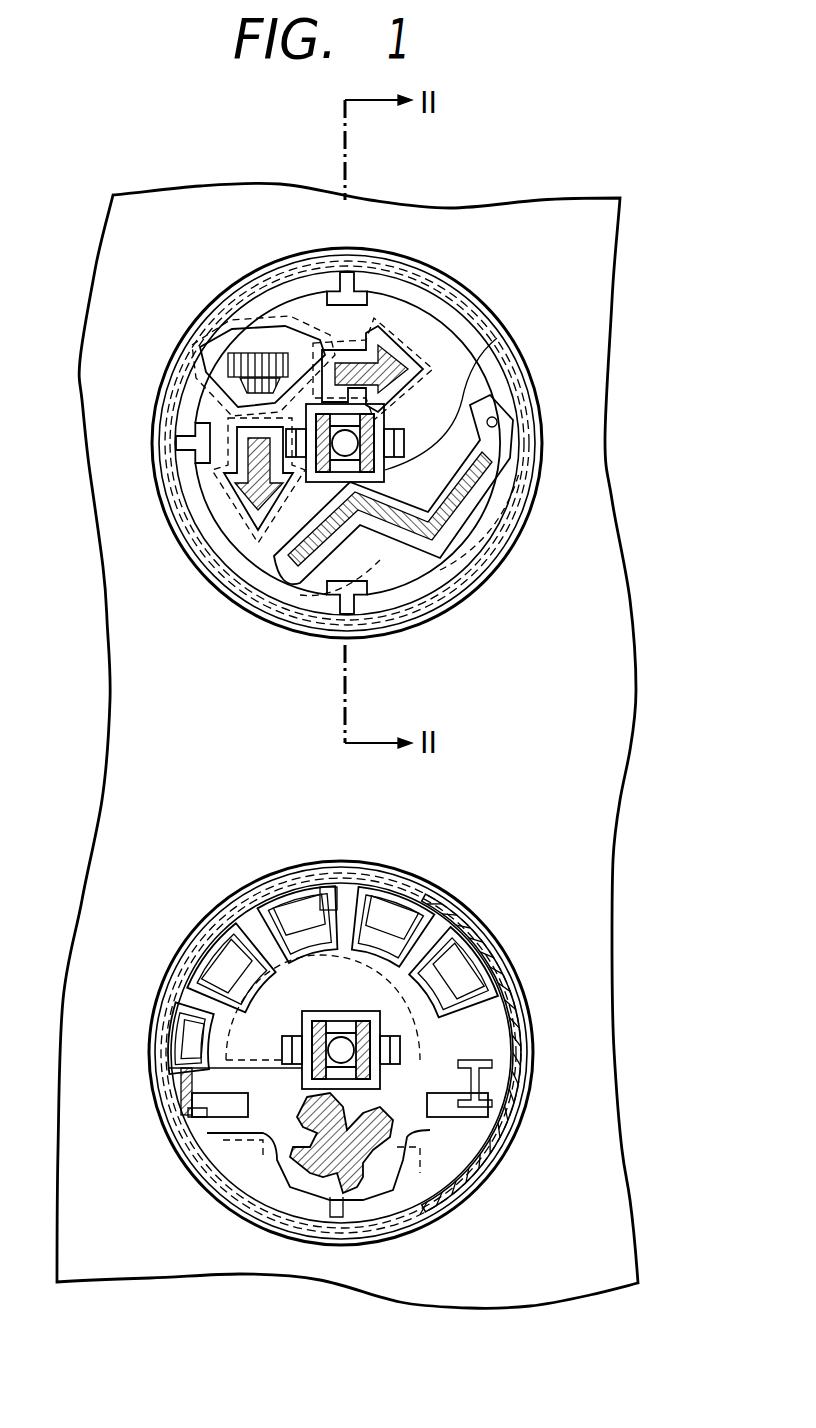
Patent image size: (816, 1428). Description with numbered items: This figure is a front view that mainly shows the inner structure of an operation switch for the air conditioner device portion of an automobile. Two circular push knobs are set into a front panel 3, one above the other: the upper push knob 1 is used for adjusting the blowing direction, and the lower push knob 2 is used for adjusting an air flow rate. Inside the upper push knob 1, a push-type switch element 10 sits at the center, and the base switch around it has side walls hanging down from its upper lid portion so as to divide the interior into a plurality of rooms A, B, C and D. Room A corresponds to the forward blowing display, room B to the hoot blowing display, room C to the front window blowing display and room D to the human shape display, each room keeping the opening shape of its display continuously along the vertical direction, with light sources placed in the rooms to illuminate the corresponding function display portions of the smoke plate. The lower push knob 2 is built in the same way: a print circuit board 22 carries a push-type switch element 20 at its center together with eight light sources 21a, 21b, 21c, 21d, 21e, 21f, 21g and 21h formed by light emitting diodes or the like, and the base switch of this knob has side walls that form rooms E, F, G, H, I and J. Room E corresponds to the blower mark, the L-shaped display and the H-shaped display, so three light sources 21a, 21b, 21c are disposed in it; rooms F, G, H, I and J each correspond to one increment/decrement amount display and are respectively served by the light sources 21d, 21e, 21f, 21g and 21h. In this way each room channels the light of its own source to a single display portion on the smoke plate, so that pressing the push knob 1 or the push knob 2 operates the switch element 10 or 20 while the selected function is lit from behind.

The push knob 1 is at (553, 421).
The push knob 2 is at (523, 1133).
The front panel 3 is at (520, 770).
The push-type switch element 10 is at (470, 380).
The push-type switch element 20 is at (385, 1060).
The print circuit board 22 is at (505, 997).
The light source 21a is at (290, 1188).
The light source 21b is at (237, 1108).
The light source 21c is at (450, 1107).
The light source 21d is at (205, 1020).
The light source 21e is at (200, 960).
The light source 21f is at (318, 885).
The light source 21g is at (418, 883).
The light source 21h is at (478, 937).
The room A is at (405, 357).
The room B is at (237, 505).
The room C is at (263, 318).
The room D is at (402, 547).
The room E is at (412, 1130).
The room F is at (190, 1025).
The room G is at (223, 928).
The room H is at (300, 923).
The room I is at (375, 927).
The room J is at (470, 972).